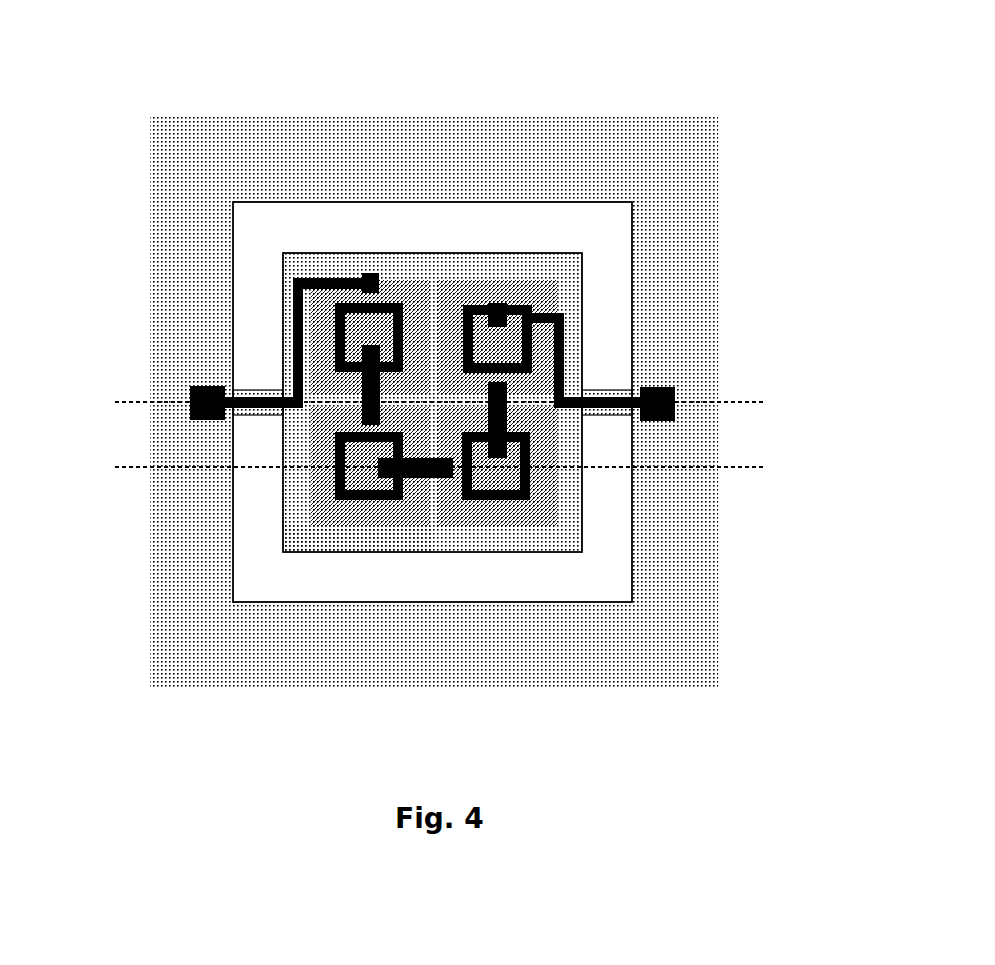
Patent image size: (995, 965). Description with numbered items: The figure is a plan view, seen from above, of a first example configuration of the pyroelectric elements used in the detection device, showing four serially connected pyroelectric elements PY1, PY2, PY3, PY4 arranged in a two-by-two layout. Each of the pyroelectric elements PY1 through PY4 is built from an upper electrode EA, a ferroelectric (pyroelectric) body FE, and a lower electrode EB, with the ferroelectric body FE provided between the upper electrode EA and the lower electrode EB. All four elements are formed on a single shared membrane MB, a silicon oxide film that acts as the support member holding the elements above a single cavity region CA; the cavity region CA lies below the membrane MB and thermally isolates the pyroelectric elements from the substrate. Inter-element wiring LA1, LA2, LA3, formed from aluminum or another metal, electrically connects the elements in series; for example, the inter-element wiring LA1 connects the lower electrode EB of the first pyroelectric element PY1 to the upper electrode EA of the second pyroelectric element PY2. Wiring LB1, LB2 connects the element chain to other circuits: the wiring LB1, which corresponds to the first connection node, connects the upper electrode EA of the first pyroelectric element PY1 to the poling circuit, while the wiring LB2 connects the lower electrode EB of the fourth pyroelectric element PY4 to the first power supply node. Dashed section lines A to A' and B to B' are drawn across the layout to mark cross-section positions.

The first pyroelectric element PY1 is at (643, 63).
The second pyroelectric element PY2 is at (518, 545).
The third pyroelectric element PY3 is at (294, 531).
The fourth pyroelectric element PY4 is at (397, 275).
The upper electrode EA is at (480, 312).
The ferroelectric body FE is at (499, 302).
The lower electrode EB is at (537, 282).
The wiring LB1 is at (598, 395).
The wiring LB2 is at (266, 396).
The inter-element wiring LA1 is at (507, 422).
The inter-element wiring LA2 is at (416, 478).
The inter-element wiring LA3 is at (350, 386).
The membrane MB is at (482, 540).
The cavity region CA is at (583, 577).
The section line A is at (430, 402).
The section line A' is at (790, 402).
The section line B is at (430, 467).
The section line B' is at (790, 467).